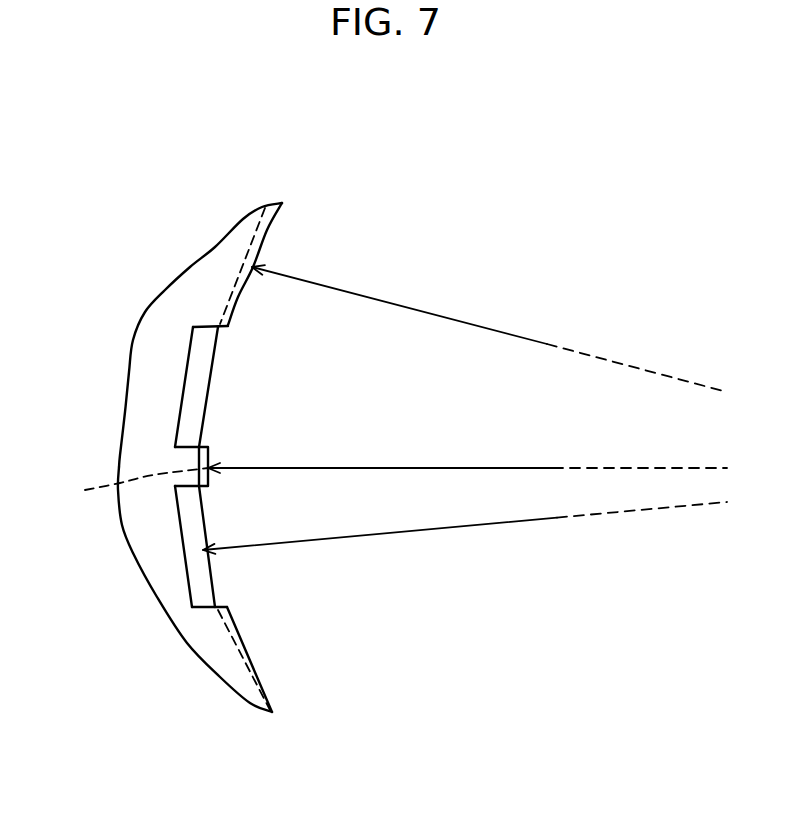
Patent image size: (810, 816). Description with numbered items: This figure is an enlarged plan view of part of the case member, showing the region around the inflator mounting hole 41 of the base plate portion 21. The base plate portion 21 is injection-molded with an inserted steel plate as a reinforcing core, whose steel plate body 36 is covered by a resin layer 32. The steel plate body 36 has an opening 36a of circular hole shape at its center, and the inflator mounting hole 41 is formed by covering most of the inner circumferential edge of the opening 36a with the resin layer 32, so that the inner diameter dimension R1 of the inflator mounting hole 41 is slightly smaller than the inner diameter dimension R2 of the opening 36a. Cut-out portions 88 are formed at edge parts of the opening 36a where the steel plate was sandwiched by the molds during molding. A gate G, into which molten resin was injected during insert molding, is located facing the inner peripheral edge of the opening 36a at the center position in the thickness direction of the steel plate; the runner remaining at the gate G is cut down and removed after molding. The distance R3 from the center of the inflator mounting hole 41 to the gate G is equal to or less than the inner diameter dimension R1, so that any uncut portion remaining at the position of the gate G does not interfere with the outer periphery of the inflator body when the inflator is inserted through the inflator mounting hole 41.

The resin layer 32 is at (170, 298).
The inflator mounting hole 41 is at (265, 237).
The base plate portion 21 is at (202, 638).
The cut-out portion 88 is at (225, 327).
The steel plate body 36 is at (192, 555).
The opening 36a is at (206, 393).
The gate G is at (161, 459).
The inner diameter dimension of the inflator mounting hole R1 is at (489, 328).
The inner diameter dimension of the opening R2 is at (465, 544).
The distance from the center of the inflator mounting hole to each gate R3 is at (467, 447).